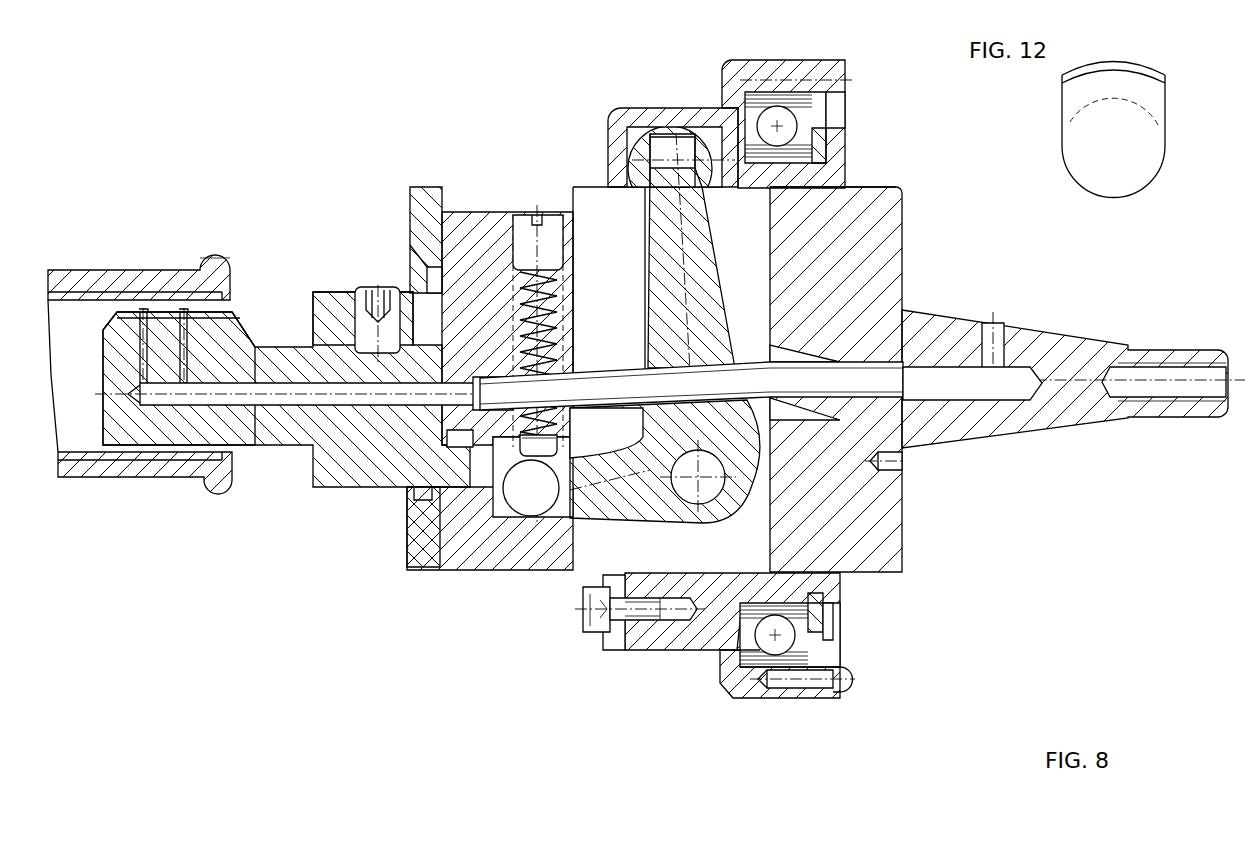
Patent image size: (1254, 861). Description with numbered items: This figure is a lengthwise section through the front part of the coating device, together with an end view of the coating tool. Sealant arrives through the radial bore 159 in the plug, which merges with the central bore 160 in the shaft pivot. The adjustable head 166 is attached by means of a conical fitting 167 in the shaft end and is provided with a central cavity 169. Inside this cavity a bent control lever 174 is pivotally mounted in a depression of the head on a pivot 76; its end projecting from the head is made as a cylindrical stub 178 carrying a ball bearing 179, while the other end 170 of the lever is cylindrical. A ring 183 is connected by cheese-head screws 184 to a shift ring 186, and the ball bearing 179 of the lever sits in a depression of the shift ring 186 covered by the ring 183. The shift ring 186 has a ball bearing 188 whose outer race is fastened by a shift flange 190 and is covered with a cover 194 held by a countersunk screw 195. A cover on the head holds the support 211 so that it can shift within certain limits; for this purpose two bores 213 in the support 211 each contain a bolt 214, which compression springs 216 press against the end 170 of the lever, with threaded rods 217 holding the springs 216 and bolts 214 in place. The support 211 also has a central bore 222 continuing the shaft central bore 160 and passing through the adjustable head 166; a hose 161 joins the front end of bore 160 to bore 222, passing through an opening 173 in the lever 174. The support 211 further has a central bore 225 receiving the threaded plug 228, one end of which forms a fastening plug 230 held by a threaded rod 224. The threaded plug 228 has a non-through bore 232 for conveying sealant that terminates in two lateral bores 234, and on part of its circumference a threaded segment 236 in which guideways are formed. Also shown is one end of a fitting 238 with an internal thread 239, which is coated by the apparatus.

In FIG. 8, the pivot pin 76 is at (694, 488).
In FIG. 8, the radial bore 159 is at (998, 337).
In FIG. 8, the central bore 160 is at (1020, 387).
In FIG. 8, the hose 161 is at (900, 298).
In FIG. 8, the adjustable head 166 is at (888, 542).
In FIG. 8, the conical fitting 167 is at (958, 428).
In FIG. 8, the central cavity 169 is at (600, 205).
In FIG. 8, the other end of the control lever 170 is at (527, 503).
In FIG. 8, the opening 173 is at (718, 355).
In FIG. 8, the bent control lever 174 is at (597, 500).
In FIG. 8, the cylindrical stub 178 is at (685, 148).
In FIG. 8, the ball bearing 179 is at (640, 135).
In FIG. 8, the ring 183 is at (610, 650).
In FIG. 8, the cheese-head screws 184 is at (592, 618).
In FIG. 8, the shift ring 186 is at (667, 638).
In FIG. 8, the ball bearing 188 is at (813, 102).
In FIG. 8, the shift flange 190 is at (748, 687).
In FIG. 8, the cover 194 is at (840, 637).
In FIG. 8, the countersunk screw 195 is at (847, 690).
In FIG. 8, the support 211 is at (462, 556).
In FIG. 8, the bores 213 is at (556, 332).
In FIG. 8, the bolt 214 is at (425, 505).
In FIG. 8, the compression springs 216 is at (552, 358).
In FIG. 8, the threaded rods 217 is at (528, 228).
In FIG. 8, the central bore 222 is at (492, 375).
In FIG. 8, the threaded rod 224 is at (380, 297).
In FIG. 8, the central bore 225 is at (331, 343).
In FIG. 8, the threaded plug 228 is at (131, 428).
In FIG. 12, the threaded plug 228 is at (1132, 160).
In FIG. 8, the fastening plug 230 is at (342, 436).
In FIG. 8, the bore 232 is at (258, 395).
In FIG. 8, the lateral bores 234 is at (183, 310).
In FIG. 8, the threaded segment 236 is at (230, 312).
In FIG. 12, the threaded segment 236 is at (1135, 68).
In FIG. 8, the fitting 238 is at (72, 470).
In FIG. 8, the internal thread 239 is at (112, 288).